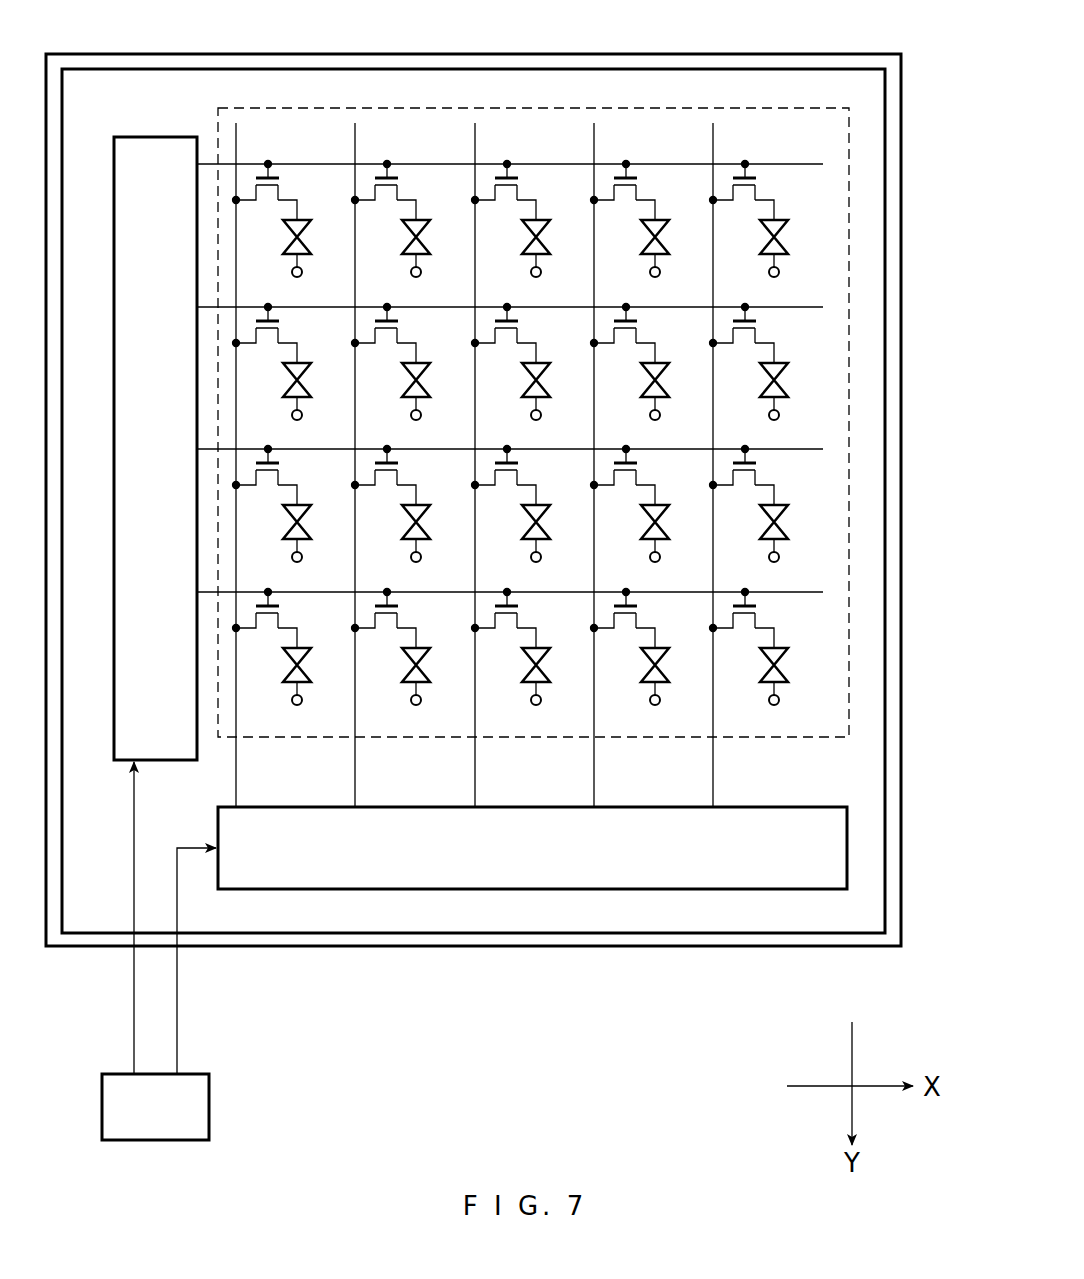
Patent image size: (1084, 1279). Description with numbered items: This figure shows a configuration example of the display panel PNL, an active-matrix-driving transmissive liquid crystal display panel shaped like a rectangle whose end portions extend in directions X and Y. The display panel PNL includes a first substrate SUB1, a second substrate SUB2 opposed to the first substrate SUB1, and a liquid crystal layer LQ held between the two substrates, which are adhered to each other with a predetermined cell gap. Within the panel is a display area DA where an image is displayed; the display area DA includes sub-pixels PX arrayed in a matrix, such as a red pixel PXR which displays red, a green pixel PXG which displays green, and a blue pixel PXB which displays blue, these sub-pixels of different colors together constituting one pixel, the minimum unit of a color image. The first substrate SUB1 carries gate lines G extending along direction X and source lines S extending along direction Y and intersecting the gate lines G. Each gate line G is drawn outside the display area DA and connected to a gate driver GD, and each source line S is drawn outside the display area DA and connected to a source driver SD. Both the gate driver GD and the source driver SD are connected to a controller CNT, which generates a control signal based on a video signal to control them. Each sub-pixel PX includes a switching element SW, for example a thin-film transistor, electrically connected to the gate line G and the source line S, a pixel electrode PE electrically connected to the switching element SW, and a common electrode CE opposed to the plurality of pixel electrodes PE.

The display panel PNL is at (473, 540).
The first substrate SUB1 is at (385, 947).
The second substrate SUB2 is at (510, 930).
The display area DA is at (849, 686).
The gate driver GD is at (155, 448).
The source driver SD is at (532, 848).
The controller CNT is at (159, 951).
The source line S is at (237, 128).
The gate line G is at (778, 164).
The red pixel PXR is at (318, 190).
The green pixel PXG is at (441, 190).
The blue pixel PXB is at (561, 190).
The sub-pixel PX is at (833, 517).
The switching element SW is at (743, 491).
The pixel electrode PE is at (775, 495).
The liquid crystal layer LQ is at (785, 522).
The common electrode CE is at (775, 547).